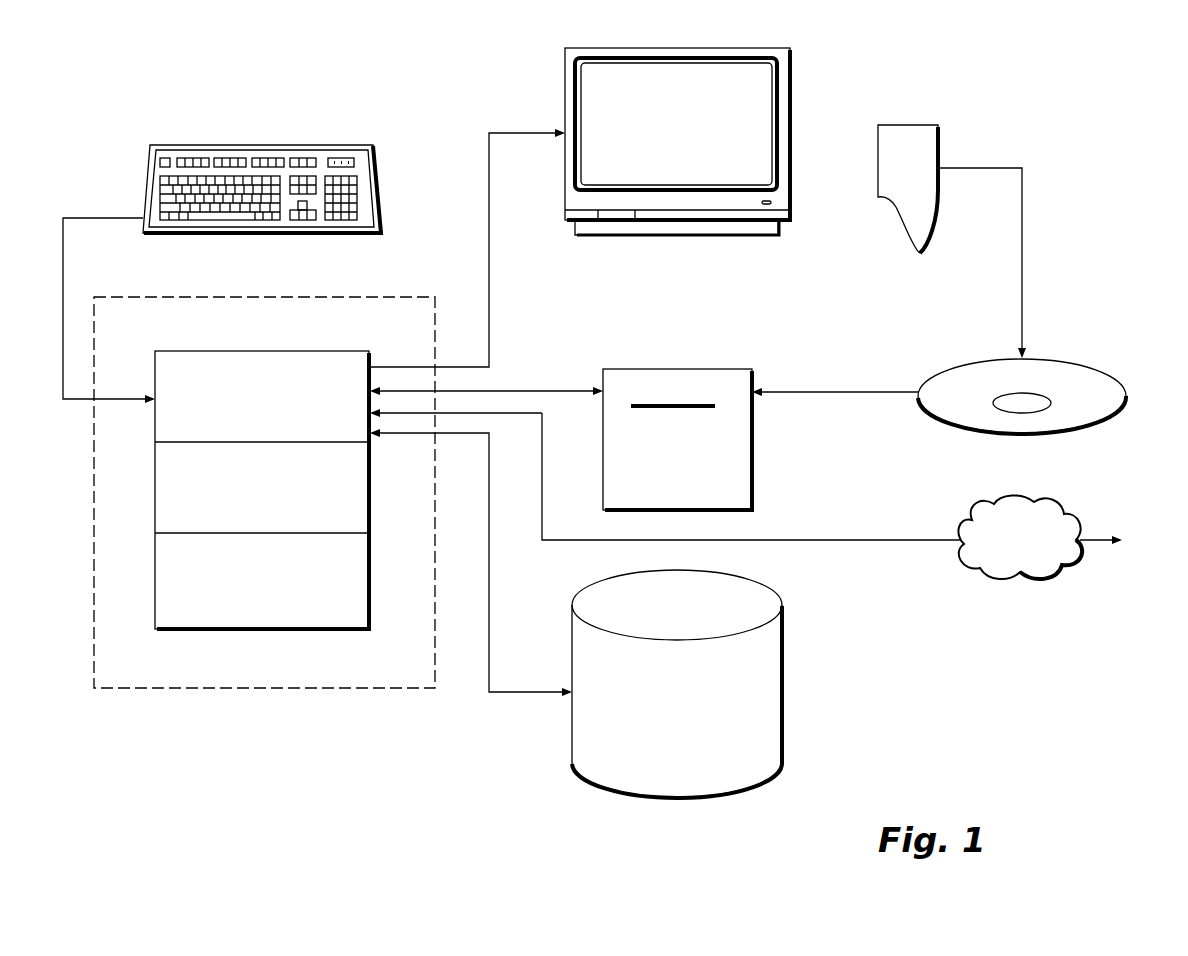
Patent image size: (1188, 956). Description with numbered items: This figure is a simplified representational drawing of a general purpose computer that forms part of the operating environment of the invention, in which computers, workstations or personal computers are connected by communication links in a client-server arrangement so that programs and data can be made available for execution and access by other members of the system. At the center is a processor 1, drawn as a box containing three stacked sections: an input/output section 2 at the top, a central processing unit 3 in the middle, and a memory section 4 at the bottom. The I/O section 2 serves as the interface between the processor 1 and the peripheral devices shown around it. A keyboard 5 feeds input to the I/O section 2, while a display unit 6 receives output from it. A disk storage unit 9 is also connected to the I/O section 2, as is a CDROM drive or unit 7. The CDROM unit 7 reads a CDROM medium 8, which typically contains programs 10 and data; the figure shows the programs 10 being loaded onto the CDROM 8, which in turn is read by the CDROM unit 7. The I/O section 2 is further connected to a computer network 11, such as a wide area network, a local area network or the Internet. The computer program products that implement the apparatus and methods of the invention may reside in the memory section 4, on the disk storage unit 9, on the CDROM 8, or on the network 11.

The processor 1 is at (387, 297).
The input/output section 2 is at (308, 351).
The central processing unit 3 is at (369, 490).
The memory section 4 is at (369, 578).
The keyboard 5 is at (266, 145).
The display unit 6 is at (742, 48).
The CDROM drive 7 is at (695, 369).
The CDROM medium 8 is at (1076, 362).
The disk storage unit 9 is at (782, 647).
The programs 10 is at (918, 125).
The computer network 11 is at (1060, 505).